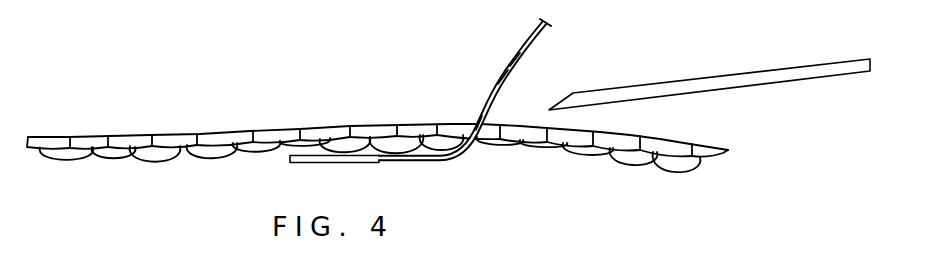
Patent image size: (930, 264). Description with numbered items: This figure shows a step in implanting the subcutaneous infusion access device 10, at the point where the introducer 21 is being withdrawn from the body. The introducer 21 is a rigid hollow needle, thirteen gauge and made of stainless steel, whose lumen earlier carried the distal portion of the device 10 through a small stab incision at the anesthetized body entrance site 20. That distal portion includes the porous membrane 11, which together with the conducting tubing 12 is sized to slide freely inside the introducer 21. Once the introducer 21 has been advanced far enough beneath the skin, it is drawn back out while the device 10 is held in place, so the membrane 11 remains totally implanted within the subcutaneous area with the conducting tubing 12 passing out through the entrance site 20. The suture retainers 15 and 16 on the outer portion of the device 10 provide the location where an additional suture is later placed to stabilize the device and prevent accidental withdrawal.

The infusion access device 10 is at (422, 117).
The porous membrane 11 is at (312, 164).
The conducting tubing 12 is at (532, 44).
The suture retainer 15 is at (500, 78).
The suture retainer 16 is at (511, 62).
The body entrance site 20 is at (477, 122).
The introducer 21 is at (665, 88).